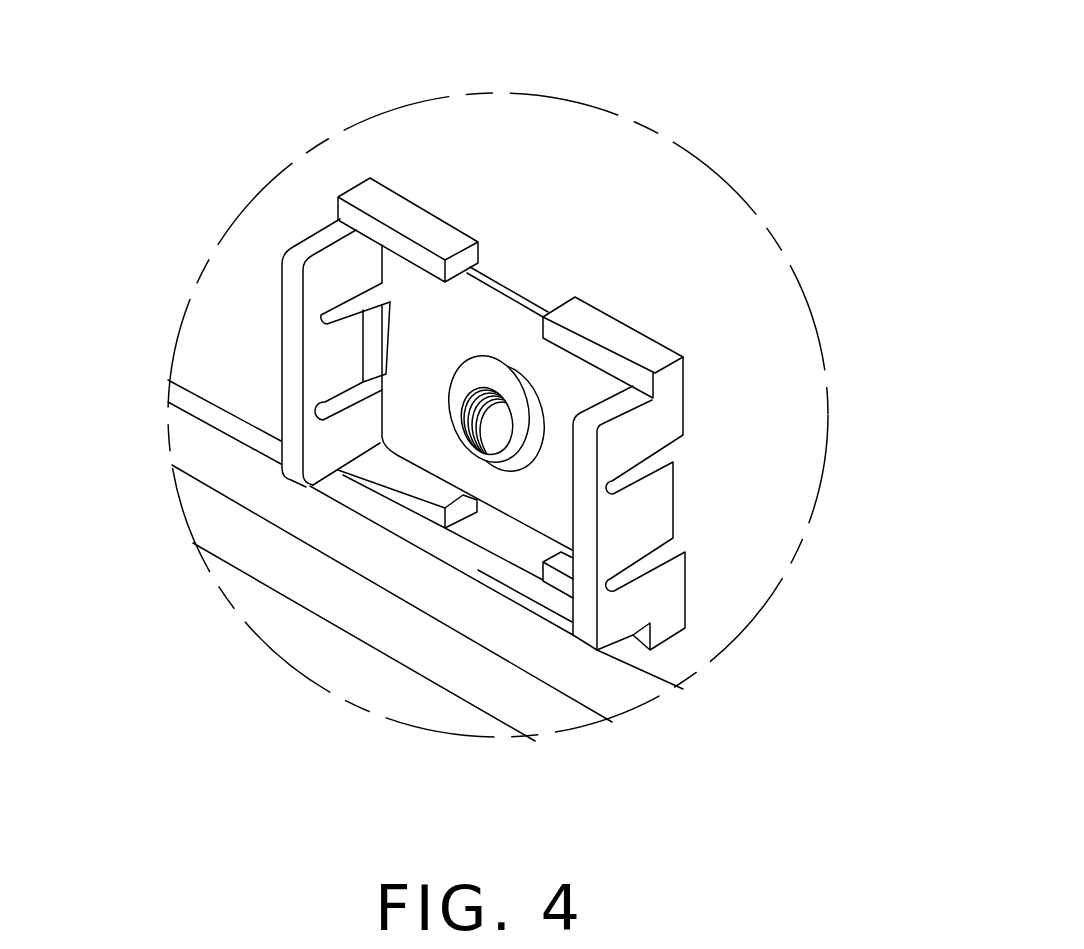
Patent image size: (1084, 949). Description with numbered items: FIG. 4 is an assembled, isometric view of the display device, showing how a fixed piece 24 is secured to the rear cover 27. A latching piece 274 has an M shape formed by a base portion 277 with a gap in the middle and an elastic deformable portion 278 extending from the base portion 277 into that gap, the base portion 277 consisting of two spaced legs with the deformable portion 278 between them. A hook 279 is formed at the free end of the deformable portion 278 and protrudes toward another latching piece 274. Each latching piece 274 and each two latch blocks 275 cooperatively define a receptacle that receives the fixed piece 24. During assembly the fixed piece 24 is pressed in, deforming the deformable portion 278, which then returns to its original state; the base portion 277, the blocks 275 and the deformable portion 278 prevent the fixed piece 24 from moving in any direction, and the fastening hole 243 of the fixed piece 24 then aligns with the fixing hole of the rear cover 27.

The rear cover 27 is at (737, 384).
The fixed piece 24 is at (493, 322).
The fastening hole 243 is at (488, 422).
The latching piece 274 is at (678, 502).
The latch block 275 is at (407, 217).
The base portion 277 is at (350, 265).
The elastic deformable portion 278 is at (334, 345).
The hook 279 is at (372, 353).